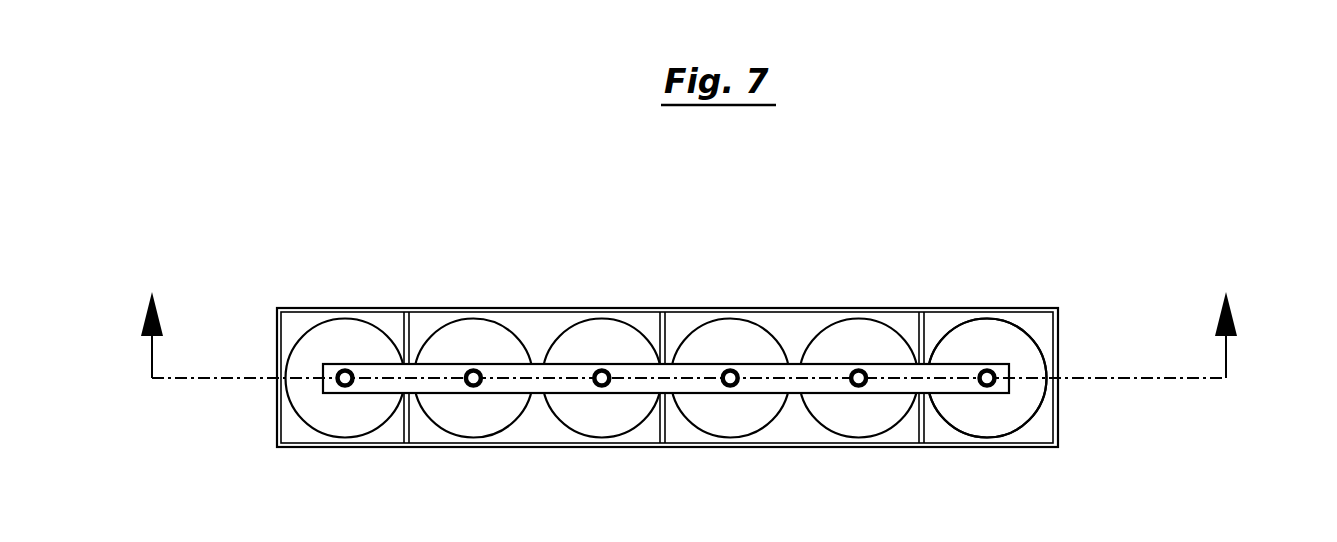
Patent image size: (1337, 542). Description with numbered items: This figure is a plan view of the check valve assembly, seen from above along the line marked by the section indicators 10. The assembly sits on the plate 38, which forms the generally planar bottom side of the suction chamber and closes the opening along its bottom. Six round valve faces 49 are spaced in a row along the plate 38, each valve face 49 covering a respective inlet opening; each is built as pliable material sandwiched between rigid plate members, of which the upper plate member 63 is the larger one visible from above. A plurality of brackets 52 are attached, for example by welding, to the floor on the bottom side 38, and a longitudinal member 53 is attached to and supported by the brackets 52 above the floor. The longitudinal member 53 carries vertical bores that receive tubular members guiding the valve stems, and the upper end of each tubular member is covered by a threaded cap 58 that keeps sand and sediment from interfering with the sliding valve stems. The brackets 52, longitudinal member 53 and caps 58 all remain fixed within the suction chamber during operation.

The section line 10- 10 is at (690, 309).
The plate 38 is at (938, 320).
The valve face 49 is at (991, 338).
The brackets 52 is at (658, 323).
The longitudinal member 53 is at (889, 372).
The threaded cap 58 is at (855, 368).
The upper plate member 63 is at (1020, 352).